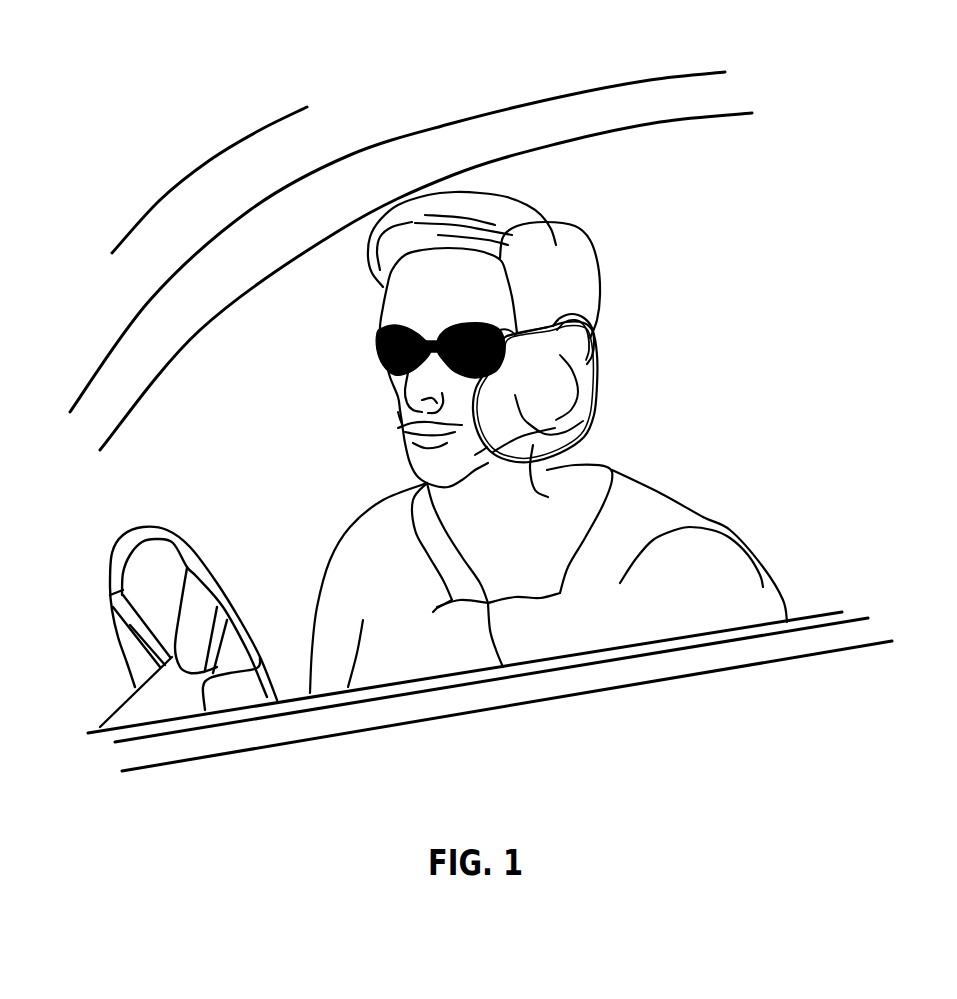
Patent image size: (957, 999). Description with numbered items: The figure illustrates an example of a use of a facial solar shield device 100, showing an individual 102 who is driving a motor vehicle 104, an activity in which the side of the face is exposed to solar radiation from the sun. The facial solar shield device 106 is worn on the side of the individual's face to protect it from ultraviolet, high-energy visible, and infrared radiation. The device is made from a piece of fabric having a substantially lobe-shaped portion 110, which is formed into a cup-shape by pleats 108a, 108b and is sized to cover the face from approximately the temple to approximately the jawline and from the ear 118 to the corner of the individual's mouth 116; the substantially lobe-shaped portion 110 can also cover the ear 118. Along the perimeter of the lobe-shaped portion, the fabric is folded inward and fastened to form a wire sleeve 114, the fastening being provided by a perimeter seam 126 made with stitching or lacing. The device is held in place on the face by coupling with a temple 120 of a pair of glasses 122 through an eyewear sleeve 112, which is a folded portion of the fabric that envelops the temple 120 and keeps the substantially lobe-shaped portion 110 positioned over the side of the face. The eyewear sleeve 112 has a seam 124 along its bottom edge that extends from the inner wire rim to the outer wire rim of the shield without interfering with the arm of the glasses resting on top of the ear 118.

The facial solar shield device use 100 is at (86, 46).
The individual 102 is at (783, 224).
The motor vehicle 104 is at (123, 540).
The facial solar shield device 106 is at (620, 327).
The pleat 108a is at (540, 458).
The pleat 108b is at (593, 390).
The substantially lobe-shaped portion 110 is at (548, 401).
The eyewear sleeve 112 is at (553, 327).
The wire sleeve 114 is at (487, 447).
The corner of the individual's mouth 116 is at (398, 420).
The individual's ear 118 is at (604, 330).
The temple 120 is at (503, 330).
The pair of glasses 122 is at (377, 350).
The seam 124 is at (531, 347).
The perimeter seam 126 is at (510, 462).